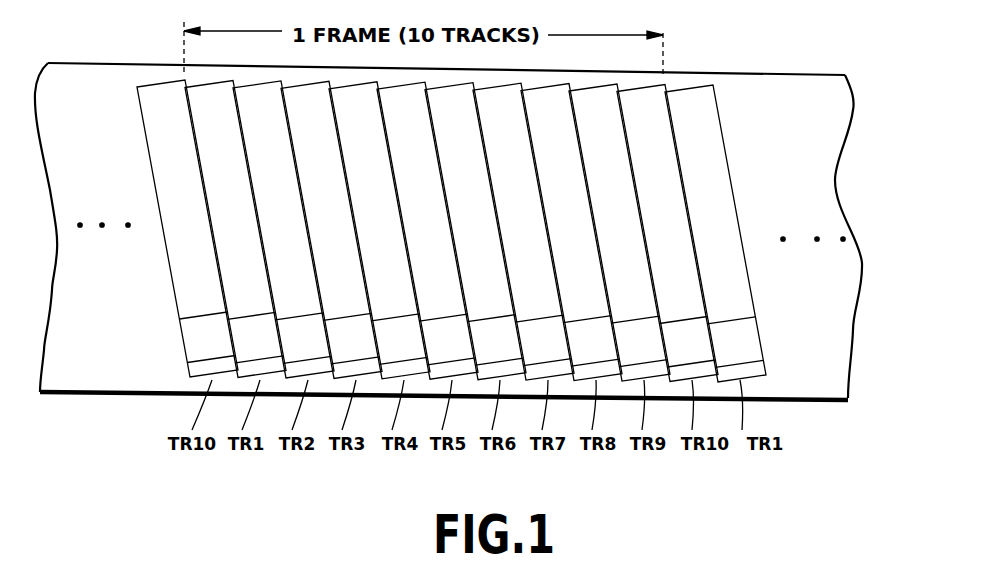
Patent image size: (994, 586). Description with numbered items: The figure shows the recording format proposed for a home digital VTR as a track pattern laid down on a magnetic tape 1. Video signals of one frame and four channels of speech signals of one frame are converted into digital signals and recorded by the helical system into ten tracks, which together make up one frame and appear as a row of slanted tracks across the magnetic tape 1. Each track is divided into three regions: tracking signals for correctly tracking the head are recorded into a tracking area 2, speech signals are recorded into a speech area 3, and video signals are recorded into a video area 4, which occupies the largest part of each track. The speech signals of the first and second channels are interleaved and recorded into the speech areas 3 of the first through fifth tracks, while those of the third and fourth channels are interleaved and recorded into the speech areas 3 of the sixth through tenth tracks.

The magnetic tape 1 is at (752, 80).
The tracking area 2 is at (753, 373).
The speech area 3 is at (743, 343).
The video area 4 is at (728, 250).